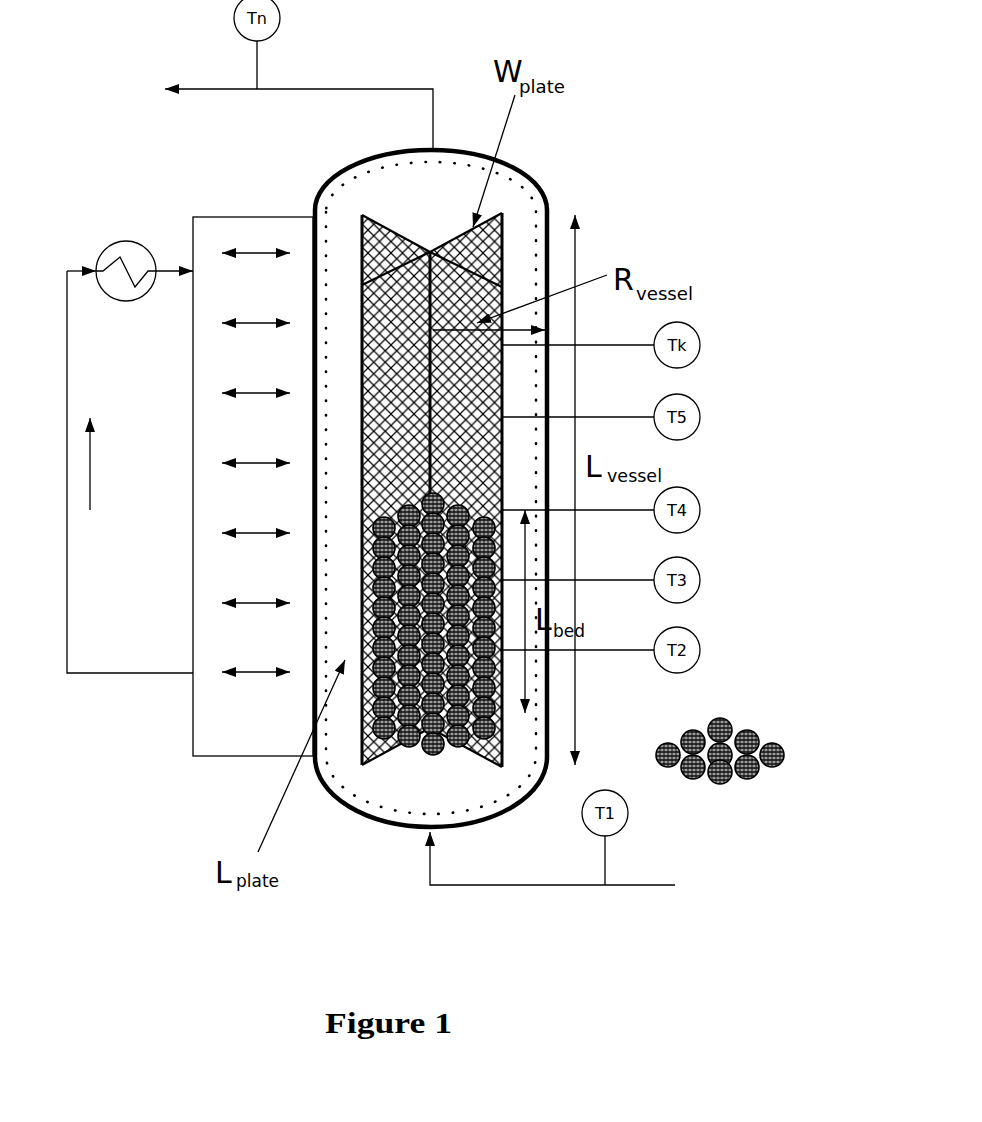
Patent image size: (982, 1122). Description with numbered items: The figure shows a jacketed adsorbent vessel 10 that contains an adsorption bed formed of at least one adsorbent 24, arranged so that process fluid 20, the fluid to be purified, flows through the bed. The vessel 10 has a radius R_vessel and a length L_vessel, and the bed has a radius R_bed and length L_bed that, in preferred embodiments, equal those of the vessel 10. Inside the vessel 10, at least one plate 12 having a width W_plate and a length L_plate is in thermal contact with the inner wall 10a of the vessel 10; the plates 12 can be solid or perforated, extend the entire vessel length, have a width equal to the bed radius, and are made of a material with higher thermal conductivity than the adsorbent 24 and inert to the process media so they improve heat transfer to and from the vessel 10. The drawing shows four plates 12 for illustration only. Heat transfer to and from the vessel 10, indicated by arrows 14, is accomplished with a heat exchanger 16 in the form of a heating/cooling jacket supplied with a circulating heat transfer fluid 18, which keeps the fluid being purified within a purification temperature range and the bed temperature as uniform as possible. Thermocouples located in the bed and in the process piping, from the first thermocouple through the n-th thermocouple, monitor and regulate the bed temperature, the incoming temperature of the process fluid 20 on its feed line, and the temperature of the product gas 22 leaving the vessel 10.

The vessel 10 is at (327, 182).
The inner wall 10a is at (320, 258).
The plate 12 is at (380, 762).
The arrows 14 is at (253, 486).
The heat exchanger 16 is at (126, 252).
The circulating heat transfer fluid 18 is at (130, 472).
The process fluid 20 is at (620, 888).
The product gas 22 is at (284, 100).
The adsorbent 24 is at (497, 712).